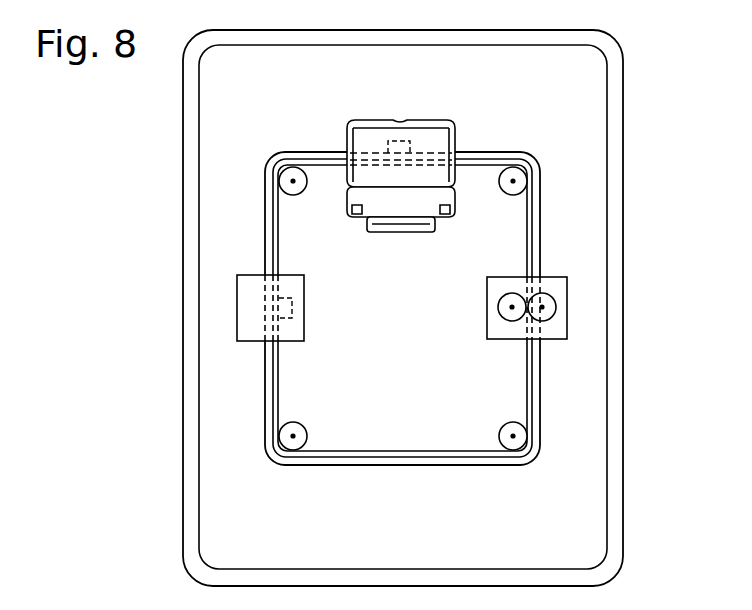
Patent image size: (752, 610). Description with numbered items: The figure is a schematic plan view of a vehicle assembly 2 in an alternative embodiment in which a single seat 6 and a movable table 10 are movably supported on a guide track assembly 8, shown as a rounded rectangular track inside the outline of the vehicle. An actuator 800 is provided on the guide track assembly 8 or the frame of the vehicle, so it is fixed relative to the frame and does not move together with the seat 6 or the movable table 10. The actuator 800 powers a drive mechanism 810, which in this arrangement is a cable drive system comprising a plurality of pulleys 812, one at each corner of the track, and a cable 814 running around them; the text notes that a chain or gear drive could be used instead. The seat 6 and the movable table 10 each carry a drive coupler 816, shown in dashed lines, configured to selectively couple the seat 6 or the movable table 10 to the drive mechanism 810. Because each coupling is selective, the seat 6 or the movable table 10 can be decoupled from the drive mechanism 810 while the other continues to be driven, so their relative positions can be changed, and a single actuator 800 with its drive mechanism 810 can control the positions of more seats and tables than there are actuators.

The vehicle assembly 2 is at (652, 92).
The seat 6 is at (345, 127).
The guide track assembly 8 is at (548, 223).
The movable table 10 is at (247, 300).
The actuator 800 is at (558, 289).
The drive mechanism 810 is at (336, 415).
The pulleys 812 is at (290, 168).
The cable 814 is at (438, 448).
The drive coupler 816 is at (399, 141).